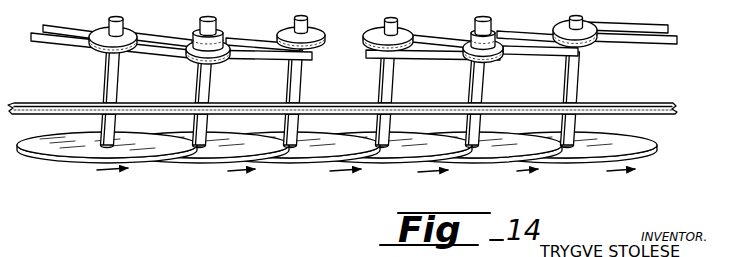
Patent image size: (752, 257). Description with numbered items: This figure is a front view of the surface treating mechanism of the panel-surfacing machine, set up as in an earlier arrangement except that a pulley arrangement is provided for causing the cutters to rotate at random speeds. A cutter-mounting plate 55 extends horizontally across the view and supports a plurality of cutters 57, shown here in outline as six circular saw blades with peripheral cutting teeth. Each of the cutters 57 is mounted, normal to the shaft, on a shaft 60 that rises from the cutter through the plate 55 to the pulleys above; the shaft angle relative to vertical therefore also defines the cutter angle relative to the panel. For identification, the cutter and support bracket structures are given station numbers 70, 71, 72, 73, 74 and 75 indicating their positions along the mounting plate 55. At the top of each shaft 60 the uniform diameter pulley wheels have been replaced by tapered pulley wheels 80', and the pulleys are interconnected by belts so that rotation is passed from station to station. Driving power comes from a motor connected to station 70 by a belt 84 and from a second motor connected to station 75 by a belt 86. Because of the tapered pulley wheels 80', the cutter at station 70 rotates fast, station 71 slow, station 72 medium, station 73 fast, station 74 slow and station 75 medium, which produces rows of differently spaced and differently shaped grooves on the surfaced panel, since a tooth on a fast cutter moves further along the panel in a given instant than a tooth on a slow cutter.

The cutter-mounting plate 55 is at (670, 101).
The cutters 57 is at (58, 157).
The shaft 60 is at (577, 82).
The station 70 is at (123, 97).
The station 71 is at (214, 97).
The station 72 is at (306, 97).
The station 73 is at (395, 98).
The station 74 is at (486, 97).
The station 75 is at (583, 98).
The tapered pulley wheels 80' is at (353, 35).
The belt 84 is at (36, 43).
The belt 86 is at (663, 44).